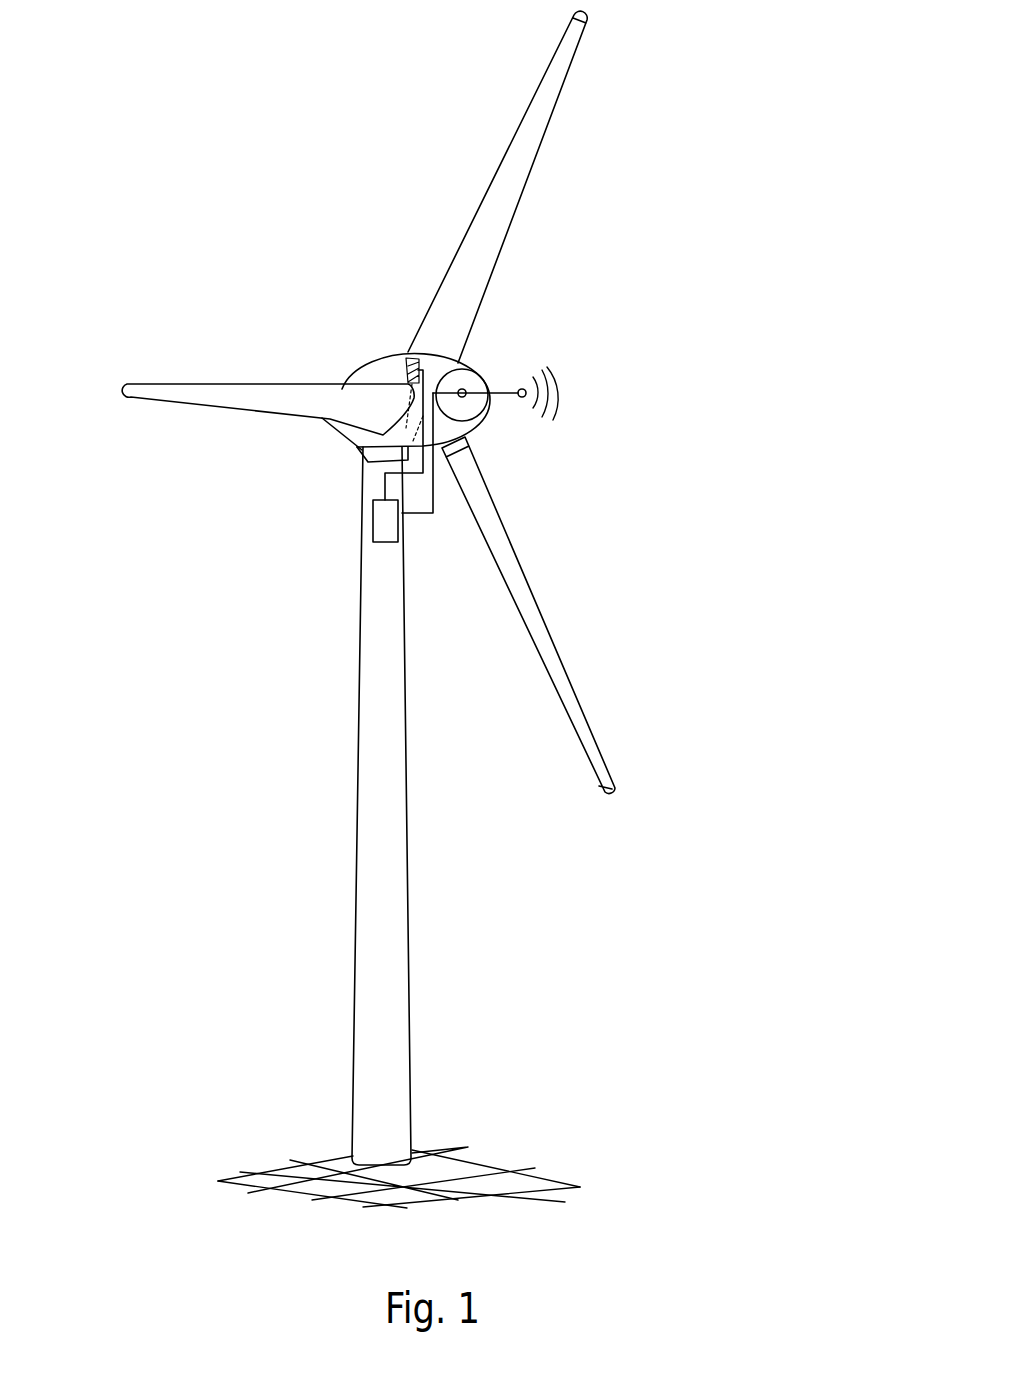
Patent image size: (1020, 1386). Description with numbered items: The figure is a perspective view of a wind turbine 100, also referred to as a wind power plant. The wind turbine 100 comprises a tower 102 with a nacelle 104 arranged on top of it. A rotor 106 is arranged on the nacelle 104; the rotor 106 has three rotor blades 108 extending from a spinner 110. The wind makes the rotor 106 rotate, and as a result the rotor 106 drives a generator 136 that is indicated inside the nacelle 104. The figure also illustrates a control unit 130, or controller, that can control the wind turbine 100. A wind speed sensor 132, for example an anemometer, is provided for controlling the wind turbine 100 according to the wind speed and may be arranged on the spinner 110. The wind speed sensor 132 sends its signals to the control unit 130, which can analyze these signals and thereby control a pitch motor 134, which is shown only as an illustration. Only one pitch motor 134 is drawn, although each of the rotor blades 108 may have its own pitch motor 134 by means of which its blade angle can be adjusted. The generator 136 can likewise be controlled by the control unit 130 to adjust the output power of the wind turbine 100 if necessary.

The wind turbine 100 is at (305, 545).
The tower 102 is at (390, 920).
The nacelle 104 is at (377, 372).
The rotor 106 is at (619, 256).
The rotor blades 108 is at (521, 122).
The spinner 110 is at (492, 424).
The control unit 130 is at (392, 530).
The wind speed sensor 132 is at (532, 372).
The pitch motor 134 is at (413, 353).
The generator 136 is at (356, 453).